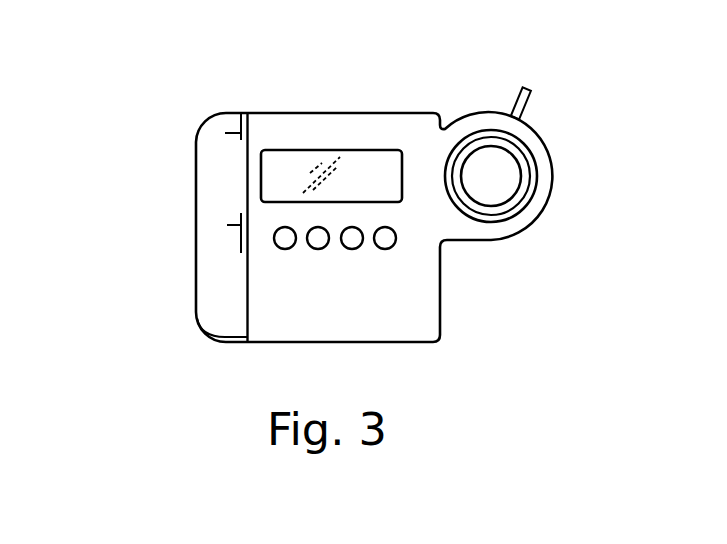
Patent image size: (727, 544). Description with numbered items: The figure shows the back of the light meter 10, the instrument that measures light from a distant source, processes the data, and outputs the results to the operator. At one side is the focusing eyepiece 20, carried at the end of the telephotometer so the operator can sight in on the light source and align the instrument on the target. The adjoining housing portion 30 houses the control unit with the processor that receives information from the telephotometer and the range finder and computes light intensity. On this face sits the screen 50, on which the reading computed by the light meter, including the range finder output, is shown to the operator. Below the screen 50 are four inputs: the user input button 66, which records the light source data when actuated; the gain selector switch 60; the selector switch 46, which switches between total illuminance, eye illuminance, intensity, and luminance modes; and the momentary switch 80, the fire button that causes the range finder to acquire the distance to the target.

The light meter 10 is at (157, 85).
The focusing eyepiece 20 is at (533, 189).
The housing portion 30 is at (288, 113).
The screen 50 is at (338, 151).
The user input button 66 is at (280, 248).
The gain selector switch 60 is at (316, 249).
The selector switch 46 is at (353, 249).
The momentary switch 80 is at (388, 248).